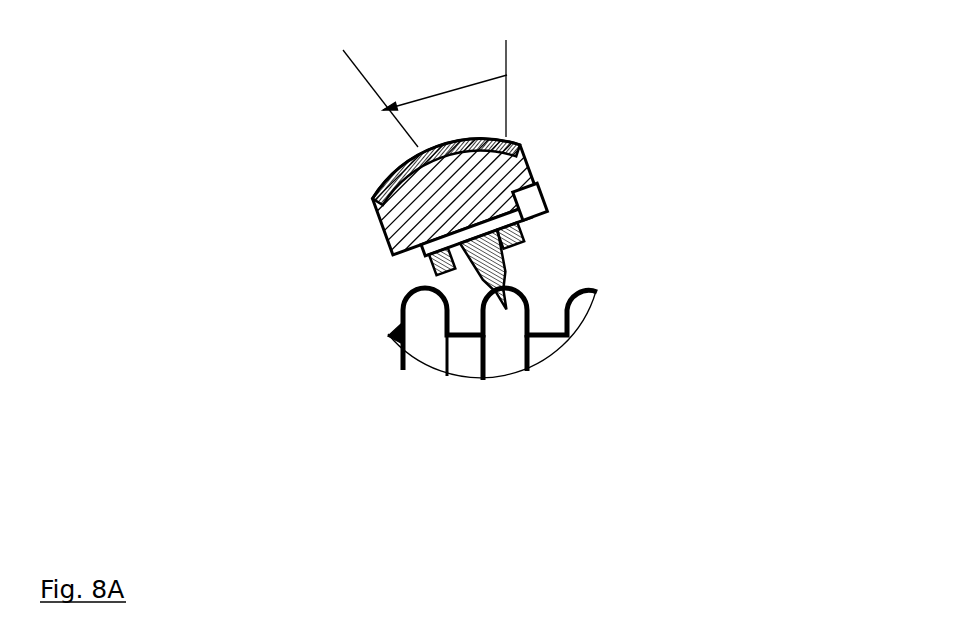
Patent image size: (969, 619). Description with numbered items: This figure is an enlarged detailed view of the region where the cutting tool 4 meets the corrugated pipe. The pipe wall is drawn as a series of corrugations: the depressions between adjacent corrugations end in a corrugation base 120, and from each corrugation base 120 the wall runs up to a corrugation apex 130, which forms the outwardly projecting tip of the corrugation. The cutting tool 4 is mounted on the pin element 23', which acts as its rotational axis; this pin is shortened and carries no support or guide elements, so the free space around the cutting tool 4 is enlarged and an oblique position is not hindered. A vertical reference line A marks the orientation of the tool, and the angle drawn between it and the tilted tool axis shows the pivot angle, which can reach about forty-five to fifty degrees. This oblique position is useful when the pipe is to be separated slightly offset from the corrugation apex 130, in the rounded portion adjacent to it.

The axis A is at (507, 53).
The pin element 23' is at (477, 211).
The corrugation apex 130 is at (513, 290).
The cutting tool 4 is at (513, 308).
The corrugation base 120 is at (467, 337).